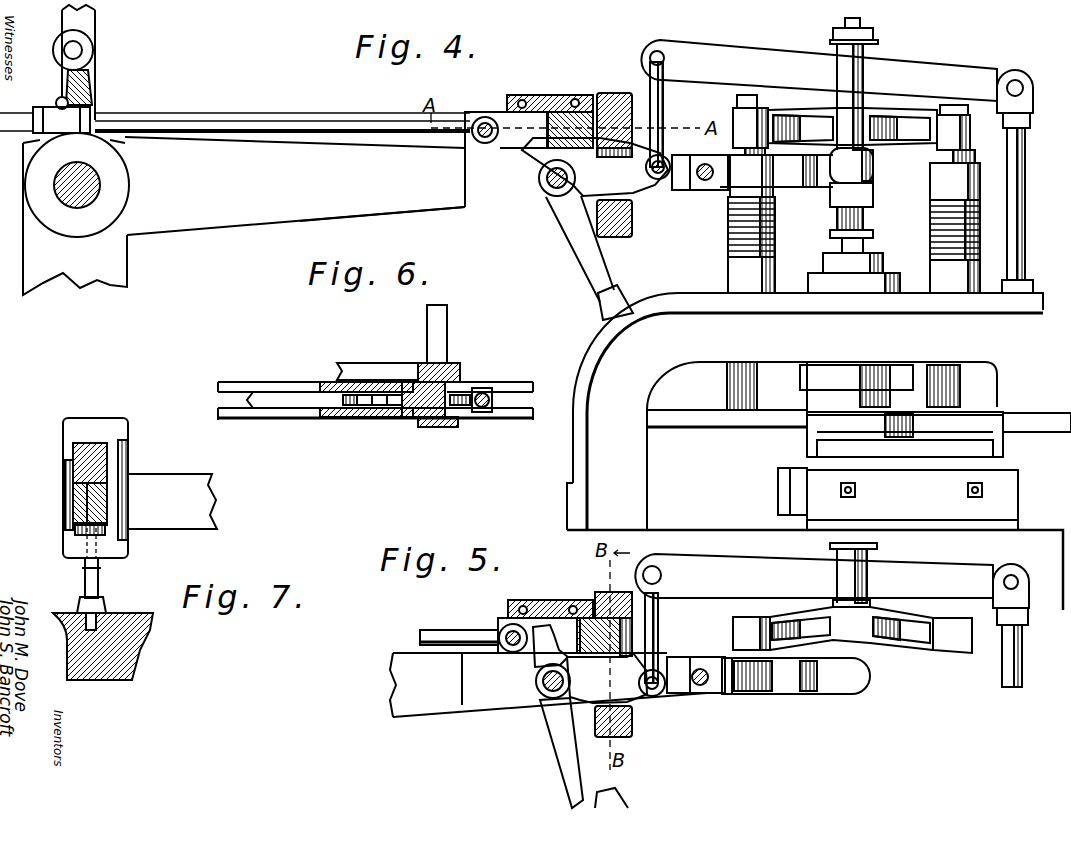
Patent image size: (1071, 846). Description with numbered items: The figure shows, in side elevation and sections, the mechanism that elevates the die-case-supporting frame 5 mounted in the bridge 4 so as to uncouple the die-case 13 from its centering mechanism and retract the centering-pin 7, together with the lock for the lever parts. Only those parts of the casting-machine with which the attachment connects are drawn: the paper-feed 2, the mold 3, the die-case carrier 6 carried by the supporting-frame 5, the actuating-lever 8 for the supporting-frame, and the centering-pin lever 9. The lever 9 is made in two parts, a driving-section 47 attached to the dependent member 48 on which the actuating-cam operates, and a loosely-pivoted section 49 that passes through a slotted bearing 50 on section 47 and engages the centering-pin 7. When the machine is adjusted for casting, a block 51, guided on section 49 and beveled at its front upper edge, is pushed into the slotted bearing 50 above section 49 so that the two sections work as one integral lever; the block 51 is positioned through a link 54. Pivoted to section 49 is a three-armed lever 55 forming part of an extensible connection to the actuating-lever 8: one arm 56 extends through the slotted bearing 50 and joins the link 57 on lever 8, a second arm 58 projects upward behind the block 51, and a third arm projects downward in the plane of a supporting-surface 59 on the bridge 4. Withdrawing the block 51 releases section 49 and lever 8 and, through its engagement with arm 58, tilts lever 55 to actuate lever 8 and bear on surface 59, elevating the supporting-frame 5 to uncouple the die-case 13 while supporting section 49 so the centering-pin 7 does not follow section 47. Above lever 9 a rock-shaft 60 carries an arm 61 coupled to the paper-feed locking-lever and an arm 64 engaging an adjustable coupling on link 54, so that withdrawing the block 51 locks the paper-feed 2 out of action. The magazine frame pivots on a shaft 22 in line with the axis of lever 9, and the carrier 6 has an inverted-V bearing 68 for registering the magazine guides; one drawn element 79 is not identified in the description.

In FIG. 4, the paper-feed 2 is at (815, 570).
In FIG. 4, the mold 3 is at (898, 499).
In FIG. 4, the bridge 4 is at (805, 411).
In FIG. 7, the bridge 4 is at (110, 613).
In FIG. 4, the supporting-frame 5 is at (1030, 413).
In FIG. 4, the die-case carrier 6 is at (987, 427).
In FIG. 4, the centering-pin 7 is at (862, 245).
In FIG. 4, the actuating-lever 8 is at (837, 155).
In FIG. 5, the actuating-lever 8 is at (832, 615).
In FIG. 5, the centering-pin lever 9 is at (796, 687).
In FIG. 4, the die-case 13 is at (973, 452).
In FIG. 4, the shaft 22 is at (102, 185).
In FIG. 6, the driving-section 47 is at (392, 342).
In FIG. 7, the driving-section 47 is at (188, 501).
In FIG. 4, the dependent member 48 is at (75, 217).
In FIG. 4, the loosely-pivoted section 49 is at (426, 203).
In FIG. 6, the loosely-pivoted section 49 is at (375, 411).
In FIG. 7, the loosely-pivoted section 49 is at (77, 498).
In FIG. 5, the loosely-pivoted section 49 is at (557, 697).
In FIG. 4, the slotted bearing 50 is at (633, 227).
In FIG. 6, the slotted bearing 50 is at (452, 370).
In FIG. 7, the slotted bearing 50 is at (95, 473).
In FIG. 5, the slotted bearing 50 is at (632, 723).
In FIG. 4, the block 51 is at (567, 108).
In FIG. 6, the block 51 is at (420, 413).
In FIG. 5, the block 51 is at (587, 627).
In FIG. 4, the link 54 is at (235, 112).
In FIG. 6, the link 54 is at (288, 398).
In FIG. 5, the link 54 is at (475, 631).
In FIG. 4, the three-armed lever 55 is at (568, 231).
In FIG. 7, the three-armed lever 55 is at (100, 570).
In FIG. 5, the three-armed lever 55 is at (541, 716).
In FIG. 4, the arm 56 is at (595, 167).
In FIG. 6, the arm 56 is at (467, 404).
In FIG. 7, the arm 56 is at (78, 520).
In FIG. 5, the arm 56 is at (607, 678).
In FIG. 4, the link 57 is at (665, 107).
In FIG. 6, the link 57 is at (487, 393).
In FIG. 5, the link 57 is at (665, 644).
In FIG. 4, the arm 58 is at (538, 147).
In FIG. 6, the arm 58 is at (357, 419).
In FIG. 7, the arm 58 is at (77, 452).
In FIG. 5, the arm 58 is at (542, 655).
In FIG. 4, the supporting-surface 59 is at (620, 294).
In FIG. 7, the supporting-surface 59 is at (82, 603).
In FIG. 5, the supporting-surface 59 is at (618, 791).
In FIG. 4, the rock-shaft 60 is at (76, 53).
In FIG. 4, the arm 61 is at (92, 22).
In FIG. 4, the arm 64 is at (78, 88).
In FIG. 4, the inverted-V bearing 68 is at (905, 407).
In FIG. 4, the bar segment 79 is at (396, 221).